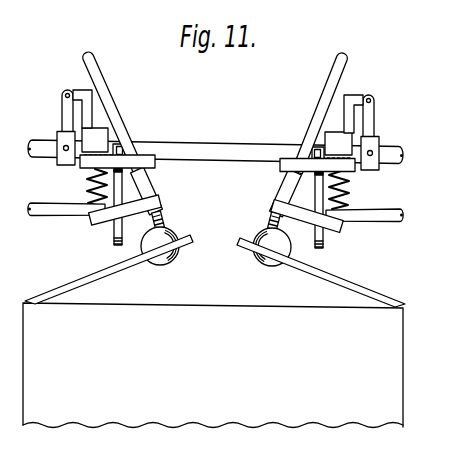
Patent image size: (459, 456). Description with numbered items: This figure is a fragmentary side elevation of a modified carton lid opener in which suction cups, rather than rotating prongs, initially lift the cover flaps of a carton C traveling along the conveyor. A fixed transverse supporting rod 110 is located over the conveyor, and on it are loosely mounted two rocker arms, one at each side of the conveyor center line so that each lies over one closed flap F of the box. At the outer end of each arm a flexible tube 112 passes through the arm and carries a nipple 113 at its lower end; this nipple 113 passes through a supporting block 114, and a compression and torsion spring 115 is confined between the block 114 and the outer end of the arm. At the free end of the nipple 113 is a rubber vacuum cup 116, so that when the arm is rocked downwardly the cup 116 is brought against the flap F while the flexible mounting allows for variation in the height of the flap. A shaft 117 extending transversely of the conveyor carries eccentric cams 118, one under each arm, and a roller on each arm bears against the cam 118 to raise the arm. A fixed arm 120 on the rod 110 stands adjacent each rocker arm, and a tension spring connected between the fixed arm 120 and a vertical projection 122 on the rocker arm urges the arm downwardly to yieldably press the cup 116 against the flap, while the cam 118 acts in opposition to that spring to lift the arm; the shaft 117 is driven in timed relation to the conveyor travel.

The supporting rod 110 is at (396, 148).
The flexible tube 112 is at (113, 92).
The nipple 113 is at (152, 191).
The supporting block 114 is at (158, 200).
The compression and torsion spring 115 is at (88, 185).
The rubber vacuum cup 116 is at (250, 231).
The shaft 117 is at (370, 220).
The eccentric cam 118 is at (115, 237).
The fixed arm 120 is at (60, 113).
The vertical projection 122 is at (80, 89).
The flap F is at (82, 278).
The carton C is at (406, 366).